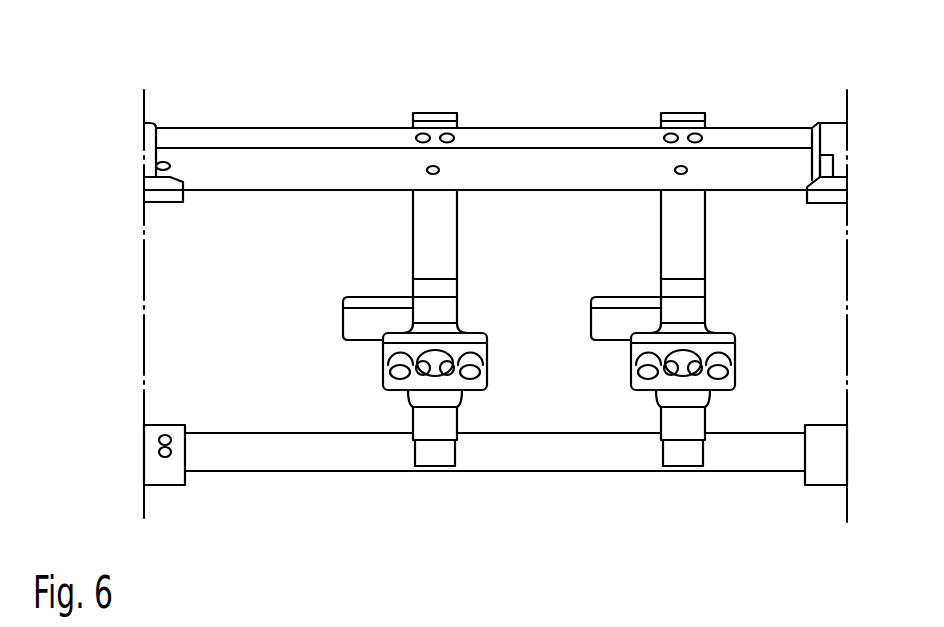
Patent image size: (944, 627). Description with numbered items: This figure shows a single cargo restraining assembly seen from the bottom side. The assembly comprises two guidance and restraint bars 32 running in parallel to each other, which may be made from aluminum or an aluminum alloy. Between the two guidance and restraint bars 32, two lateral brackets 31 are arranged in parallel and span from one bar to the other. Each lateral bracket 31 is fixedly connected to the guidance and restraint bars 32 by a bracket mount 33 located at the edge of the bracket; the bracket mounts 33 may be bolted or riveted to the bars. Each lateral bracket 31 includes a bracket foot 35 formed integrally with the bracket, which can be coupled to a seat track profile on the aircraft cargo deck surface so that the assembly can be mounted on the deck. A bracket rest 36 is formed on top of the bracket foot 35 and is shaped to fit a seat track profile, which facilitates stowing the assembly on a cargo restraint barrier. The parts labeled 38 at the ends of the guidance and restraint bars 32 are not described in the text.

The lateral bracket 31 is at (428, 251).
The guidance and restraint bar 32 is at (236, 175).
The bracket mount 33 is at (433, 118).
The bracket foot 35 is at (478, 356).
The bracket rest 36 is at (356, 323).
The bracket 38 is at (167, 197).